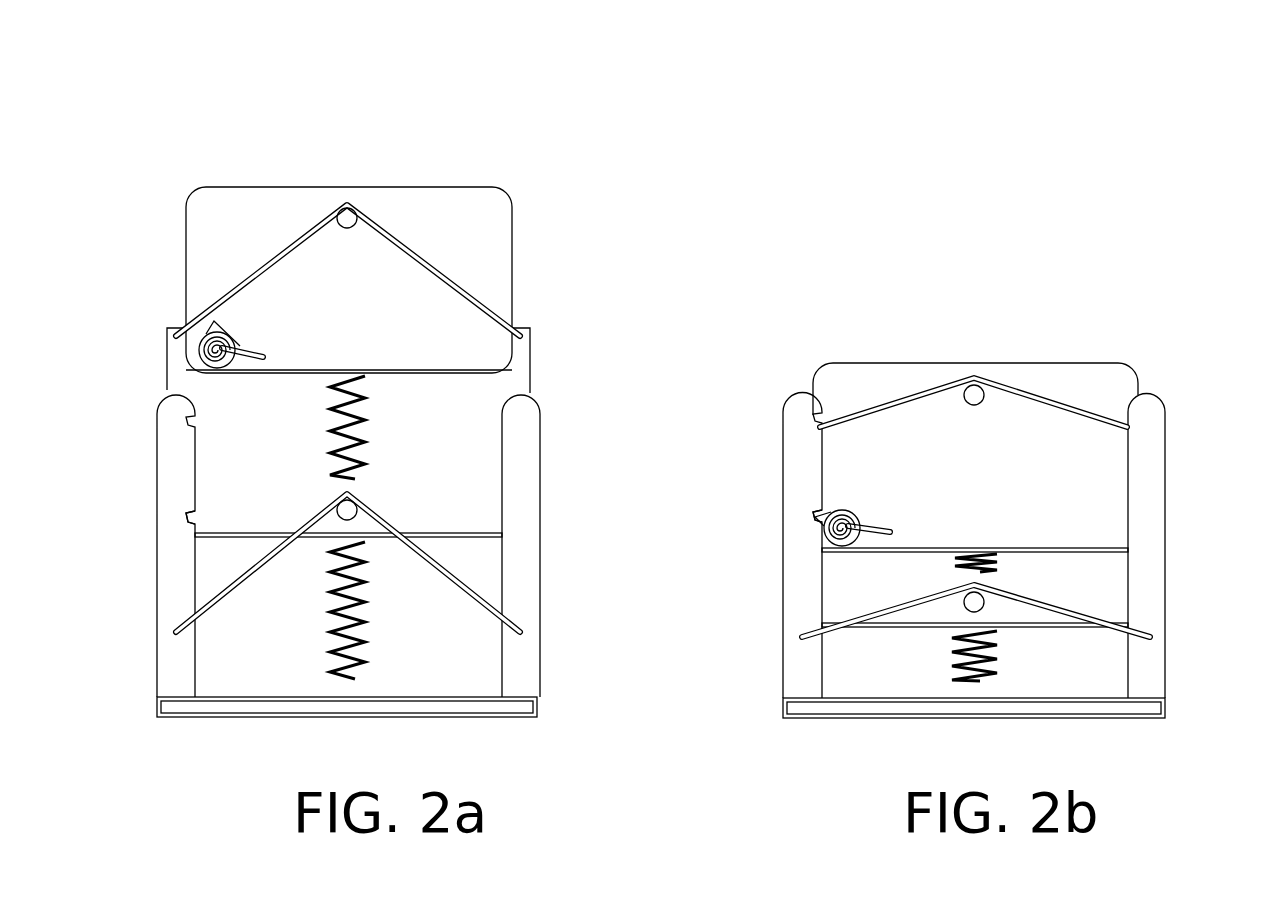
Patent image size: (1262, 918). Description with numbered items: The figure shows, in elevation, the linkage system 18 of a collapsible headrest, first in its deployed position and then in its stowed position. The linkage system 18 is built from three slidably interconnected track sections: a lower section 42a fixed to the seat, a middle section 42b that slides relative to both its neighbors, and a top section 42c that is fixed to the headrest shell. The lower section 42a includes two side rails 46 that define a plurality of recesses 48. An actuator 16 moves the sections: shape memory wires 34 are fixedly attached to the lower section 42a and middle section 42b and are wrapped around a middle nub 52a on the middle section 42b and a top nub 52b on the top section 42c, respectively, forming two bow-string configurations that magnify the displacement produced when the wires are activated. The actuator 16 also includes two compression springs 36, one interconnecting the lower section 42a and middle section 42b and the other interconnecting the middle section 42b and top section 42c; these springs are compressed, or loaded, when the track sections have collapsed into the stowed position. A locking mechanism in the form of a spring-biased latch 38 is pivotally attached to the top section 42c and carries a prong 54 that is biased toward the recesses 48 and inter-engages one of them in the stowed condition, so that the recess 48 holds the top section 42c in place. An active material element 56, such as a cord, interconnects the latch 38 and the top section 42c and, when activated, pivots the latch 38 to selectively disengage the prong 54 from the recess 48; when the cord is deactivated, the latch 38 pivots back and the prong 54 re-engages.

In FIG. 2a, the actuator 16 is at (222, 259).
In FIG. 2b, the actuator 16 is at (878, 386).
In FIG. 2a, the linkage system 18 is at (163, 155).
In FIG. 2b, the linkage system 18 is at (820, 312).
In FIG. 2a, the shape memory wires 34 is at (363, 533).
In FIG. 2b, the shape memory wires 34 is at (1053, 602).
In FIG. 2a, the compression springs 36 is at (330, 600).
In FIG. 2b, the compression springs 36 is at (995, 648).
In FIG. 2a, the spring-biased latch 38 is at (199, 351).
In FIG. 2b, the spring-biased latch 38 is at (837, 530).
In FIG. 2a, the lower section 42a is at (242, 718).
In FIG. 2b, the lower section 42a is at (870, 718).
In FIG. 2a, the middle section 42b is at (530, 360).
In FIG. 2a, the top section 42c is at (185, 283).
In FIG. 2b, the top section 42c is at (812, 386).
In FIG. 2a, the side rails 46 is at (157, 662).
In FIG. 2b, the side rails 46 is at (783, 662).
In FIG. 2a, the recesses 48 is at (187, 517).
In FIG. 2b, the recesses 48 is at (817, 517).
In FIG. 2a, the middle nub 52a is at (358, 504).
In FIG. 2b, the middle nub 52a is at (962, 598).
In FIG. 2a, the top nub 52b is at (336, 217).
In FIG. 2b, the top nub 52b is at (985, 403).
In FIG. 2a, the prong 54 is at (215, 321).
In FIG. 2b, the prong 54 is at (822, 522).
In FIG. 2a, the active material element 56 is at (223, 373).
In FIG. 2b, the active material element 56 is at (860, 540).